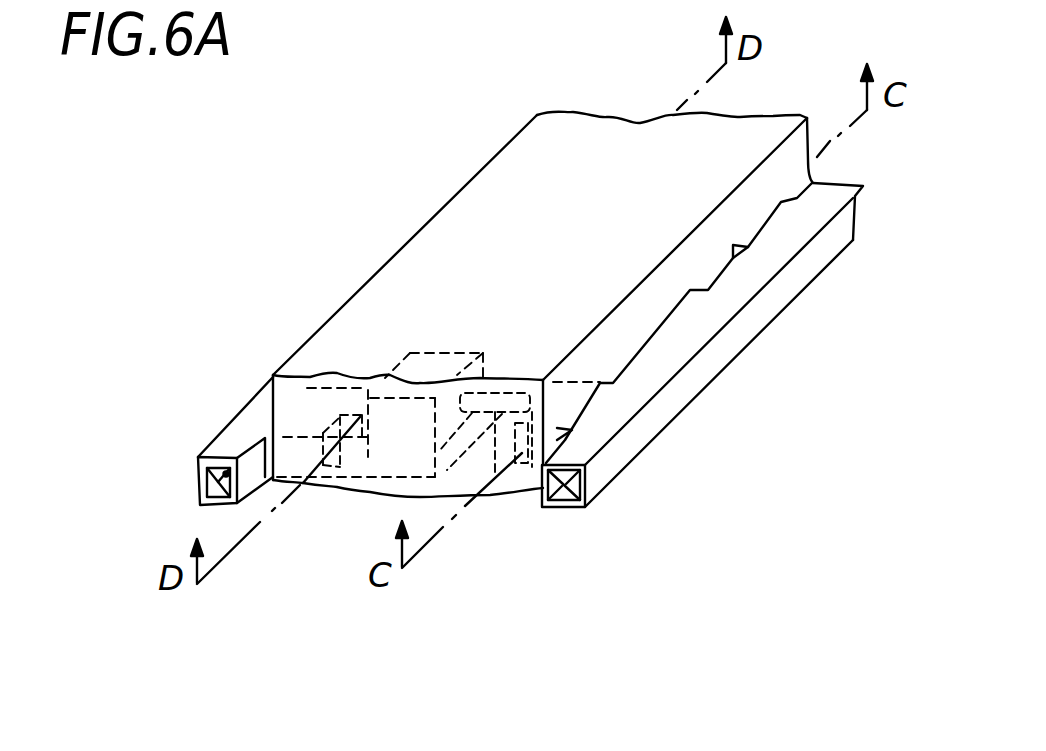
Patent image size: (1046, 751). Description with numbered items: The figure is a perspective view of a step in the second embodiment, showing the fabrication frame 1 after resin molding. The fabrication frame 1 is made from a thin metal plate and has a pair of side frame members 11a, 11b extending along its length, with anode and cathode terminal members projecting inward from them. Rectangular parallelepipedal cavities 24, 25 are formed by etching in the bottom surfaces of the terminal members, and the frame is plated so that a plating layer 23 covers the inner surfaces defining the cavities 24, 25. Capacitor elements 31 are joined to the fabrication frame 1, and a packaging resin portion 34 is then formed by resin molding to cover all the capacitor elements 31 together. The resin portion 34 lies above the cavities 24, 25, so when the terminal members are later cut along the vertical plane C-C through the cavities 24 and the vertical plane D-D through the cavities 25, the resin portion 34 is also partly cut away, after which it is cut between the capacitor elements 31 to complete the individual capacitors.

The fabrication frame 1 is at (500, 345).
The side frame member 11a is at (643, 392).
The side frame member 11b is at (233, 437).
The plating layer 23 is at (575, 506).
The cavity 24 is at (512, 480).
The cavity 25 is at (332, 423).
The capacitor element 31 is at (390, 463).
The packaging resin portion 34 is at (462, 190).